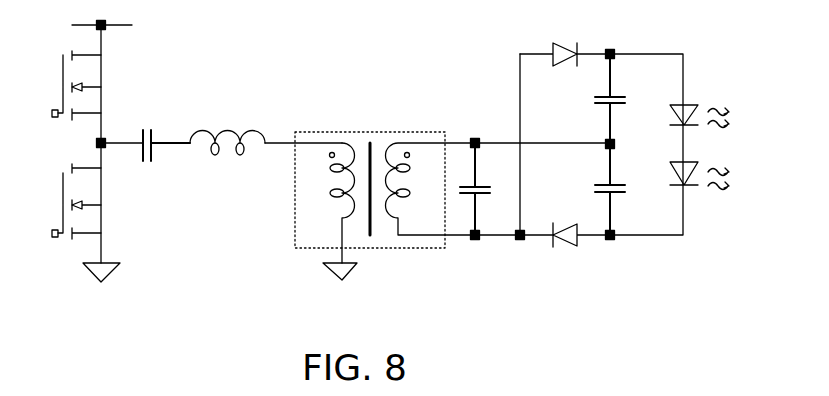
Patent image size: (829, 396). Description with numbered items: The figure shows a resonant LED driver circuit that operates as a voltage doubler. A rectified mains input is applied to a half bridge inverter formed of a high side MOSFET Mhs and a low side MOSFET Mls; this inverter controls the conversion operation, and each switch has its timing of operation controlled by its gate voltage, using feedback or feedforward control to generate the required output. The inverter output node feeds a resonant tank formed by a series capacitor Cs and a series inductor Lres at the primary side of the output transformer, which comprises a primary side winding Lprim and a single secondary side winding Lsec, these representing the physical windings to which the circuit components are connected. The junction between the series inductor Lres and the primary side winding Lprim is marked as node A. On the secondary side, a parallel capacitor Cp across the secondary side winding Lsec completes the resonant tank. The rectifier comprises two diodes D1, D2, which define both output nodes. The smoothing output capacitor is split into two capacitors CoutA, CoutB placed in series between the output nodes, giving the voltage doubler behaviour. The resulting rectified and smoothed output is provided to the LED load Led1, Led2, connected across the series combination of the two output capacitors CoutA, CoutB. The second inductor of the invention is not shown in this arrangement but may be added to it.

The high side MOSFET Mhs is at (84, 85).
The low side MOSFET Mls is at (81, 201).
The series capacitor Cs is at (161, 136).
The series inductor Lres is at (266, 133).
The node A is at (274, 134).
The primary side winding Lprim is at (317, 211).
The secondary side winding Lsec is at (431, 189).
The parallel capacitor Cp is at (482, 189).
The diode D1 is at (565, 43).
The diode D2 is at (579, 223).
The output capacitor CoutA is at (632, 99).
The output capacitor CoutB is at (633, 189).
The LED load Led1 is at (704, 106).
The LED load Led2 is at (705, 166).